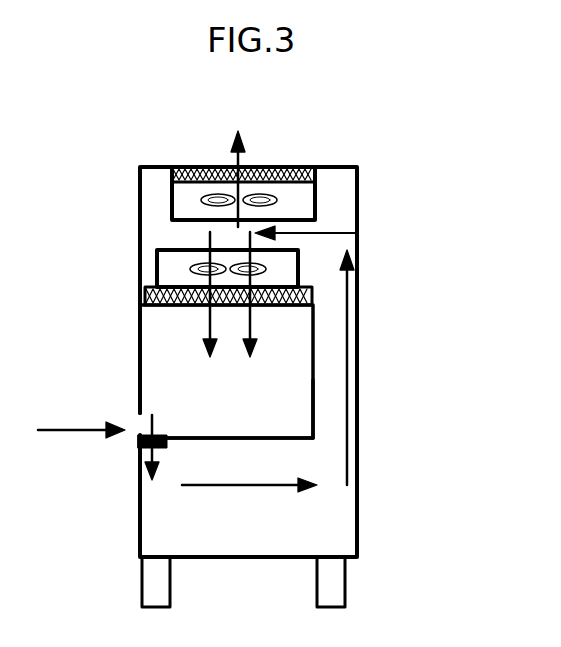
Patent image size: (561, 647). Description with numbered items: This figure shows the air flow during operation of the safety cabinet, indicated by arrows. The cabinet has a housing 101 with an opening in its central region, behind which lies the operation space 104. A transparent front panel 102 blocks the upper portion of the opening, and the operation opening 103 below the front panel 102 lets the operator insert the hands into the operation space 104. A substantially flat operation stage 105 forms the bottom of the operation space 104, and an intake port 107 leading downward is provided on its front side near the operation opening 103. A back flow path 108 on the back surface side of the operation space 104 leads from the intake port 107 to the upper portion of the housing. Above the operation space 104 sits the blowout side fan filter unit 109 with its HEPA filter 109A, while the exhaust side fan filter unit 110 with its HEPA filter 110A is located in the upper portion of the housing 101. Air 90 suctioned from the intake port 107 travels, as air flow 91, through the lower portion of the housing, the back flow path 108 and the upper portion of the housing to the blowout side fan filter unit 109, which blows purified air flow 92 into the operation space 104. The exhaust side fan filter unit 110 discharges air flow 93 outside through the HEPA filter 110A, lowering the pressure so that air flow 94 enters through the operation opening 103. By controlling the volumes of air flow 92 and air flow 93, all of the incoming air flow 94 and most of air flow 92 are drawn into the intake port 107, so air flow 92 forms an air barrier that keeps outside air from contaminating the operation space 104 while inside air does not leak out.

The housing 101 is at (290, 350).
The front panel 102 is at (86, 348).
The operation opening 103 is at (79, 413).
The operation space 104 is at (317, 352).
The operation stage 105 is at (326, 411).
The intake port 107 is at (93, 473).
The back flow path 108 is at (410, 382).
The blowout side fan filter unit 109 is at (312, 253).
The HEPA filter 109A is at (320, 260).
The exhaust side fan filter unit 110 is at (163, 188).
The HEPA filter 110A is at (191, 140).
The air 90 is at (158, 486).
The air flow 91 is at (269, 365).
The air flow 92 is at (230, 367).
The air flow 93 is at (222, 145).
The air flow 94 is at (81, 442).